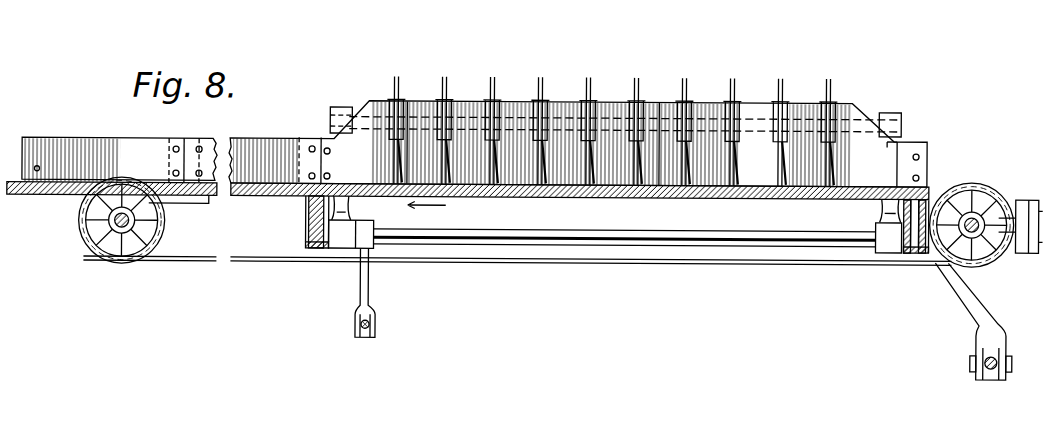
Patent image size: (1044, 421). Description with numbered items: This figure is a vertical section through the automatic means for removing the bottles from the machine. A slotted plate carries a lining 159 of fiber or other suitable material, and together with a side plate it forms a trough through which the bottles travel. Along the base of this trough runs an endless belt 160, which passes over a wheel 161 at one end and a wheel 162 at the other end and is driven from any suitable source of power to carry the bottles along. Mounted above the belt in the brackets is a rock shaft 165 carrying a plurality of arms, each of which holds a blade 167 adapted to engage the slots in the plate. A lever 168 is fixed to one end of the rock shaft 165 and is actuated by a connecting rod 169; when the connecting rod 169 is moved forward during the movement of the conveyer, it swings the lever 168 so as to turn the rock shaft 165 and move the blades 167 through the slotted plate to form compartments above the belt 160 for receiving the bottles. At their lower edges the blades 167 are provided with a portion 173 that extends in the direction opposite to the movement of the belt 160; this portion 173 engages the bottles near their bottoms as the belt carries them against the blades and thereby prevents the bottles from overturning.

The lining 159 is at (415, 107).
The endless belt 160 is at (192, 260).
The wheel 161 is at (106, 258).
The wheel 162 is at (988, 256).
The rock shaft 165 is at (583, 229).
The blade 167 is at (541, 82).
The lever 168 is at (990, 312).
The connecting rod 169 is at (978, 362).
The portion 173 is at (447, 162).